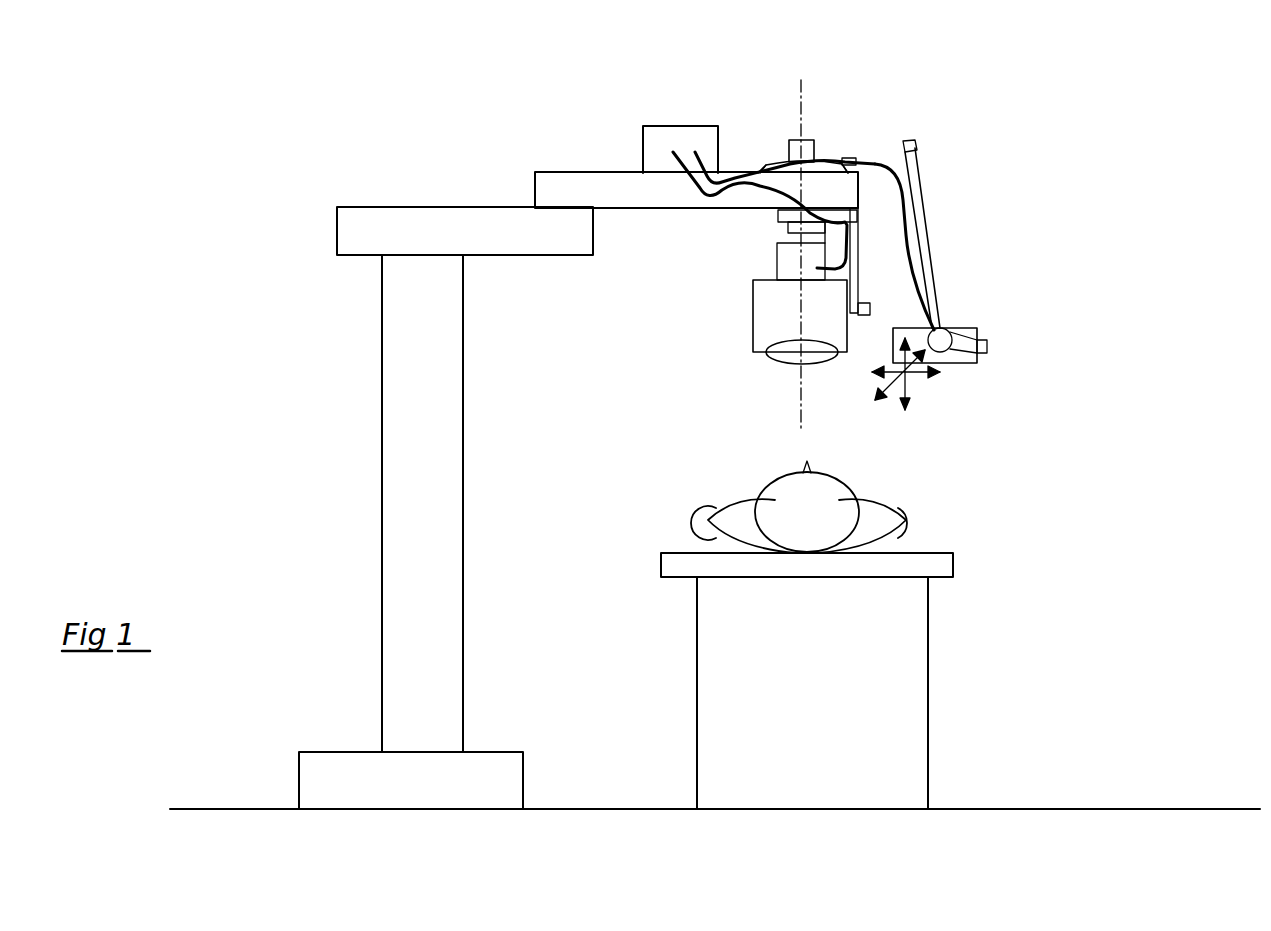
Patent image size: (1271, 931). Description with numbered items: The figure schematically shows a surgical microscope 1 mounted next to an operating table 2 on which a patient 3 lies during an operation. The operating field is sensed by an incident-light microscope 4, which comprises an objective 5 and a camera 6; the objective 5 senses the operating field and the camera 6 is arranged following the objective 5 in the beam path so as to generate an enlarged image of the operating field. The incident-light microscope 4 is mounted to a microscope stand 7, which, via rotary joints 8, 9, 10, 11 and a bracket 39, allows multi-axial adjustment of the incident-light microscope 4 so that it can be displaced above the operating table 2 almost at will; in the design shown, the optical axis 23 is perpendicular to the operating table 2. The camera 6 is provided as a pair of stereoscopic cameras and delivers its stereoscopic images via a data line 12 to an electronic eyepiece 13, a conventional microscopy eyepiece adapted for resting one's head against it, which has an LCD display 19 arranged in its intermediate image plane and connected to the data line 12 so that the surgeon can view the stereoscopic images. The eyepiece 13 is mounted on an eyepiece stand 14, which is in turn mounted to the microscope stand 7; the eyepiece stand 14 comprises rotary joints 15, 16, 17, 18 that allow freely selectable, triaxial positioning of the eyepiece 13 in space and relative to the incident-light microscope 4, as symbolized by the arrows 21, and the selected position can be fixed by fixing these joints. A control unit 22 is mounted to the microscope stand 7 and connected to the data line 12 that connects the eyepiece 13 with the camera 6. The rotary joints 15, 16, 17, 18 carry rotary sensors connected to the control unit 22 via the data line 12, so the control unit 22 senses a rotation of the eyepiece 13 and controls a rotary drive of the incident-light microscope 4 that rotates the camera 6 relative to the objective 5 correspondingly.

The surgical microscope 1 is at (1088, 184).
The operating table 2 is at (850, 683).
The patient 3 is at (883, 530).
The incident-light microscope 4 is at (790, 303).
The objective 5 is at (790, 350).
The camera 6 is at (800, 258).
The microscope stand 7 is at (418, 358).
The rotary joint 8 is at (418, 230).
The rotary joint 9 is at (558, 182).
The rotary joint 10 is at (808, 140).
The rotary joint 11 is at (867, 315).
The data line 12 is at (752, 167).
The electronic eyepiece 13 is at (987, 346).
The eyepiece stand 14 is at (922, 246).
The rotary joint 15 is at (805, 155).
The rotary joint 16 is at (850, 162).
The rotary joint 17 is at (847, 164).
The rotary joint 18 is at (978, 329).
The LCD display 19 is at (953, 353).
The arrows 21 is at (910, 372).
The control unit 22 is at (650, 138).
The optical axis 23 is at (795, 405).
The bracket 39 is at (907, 237).